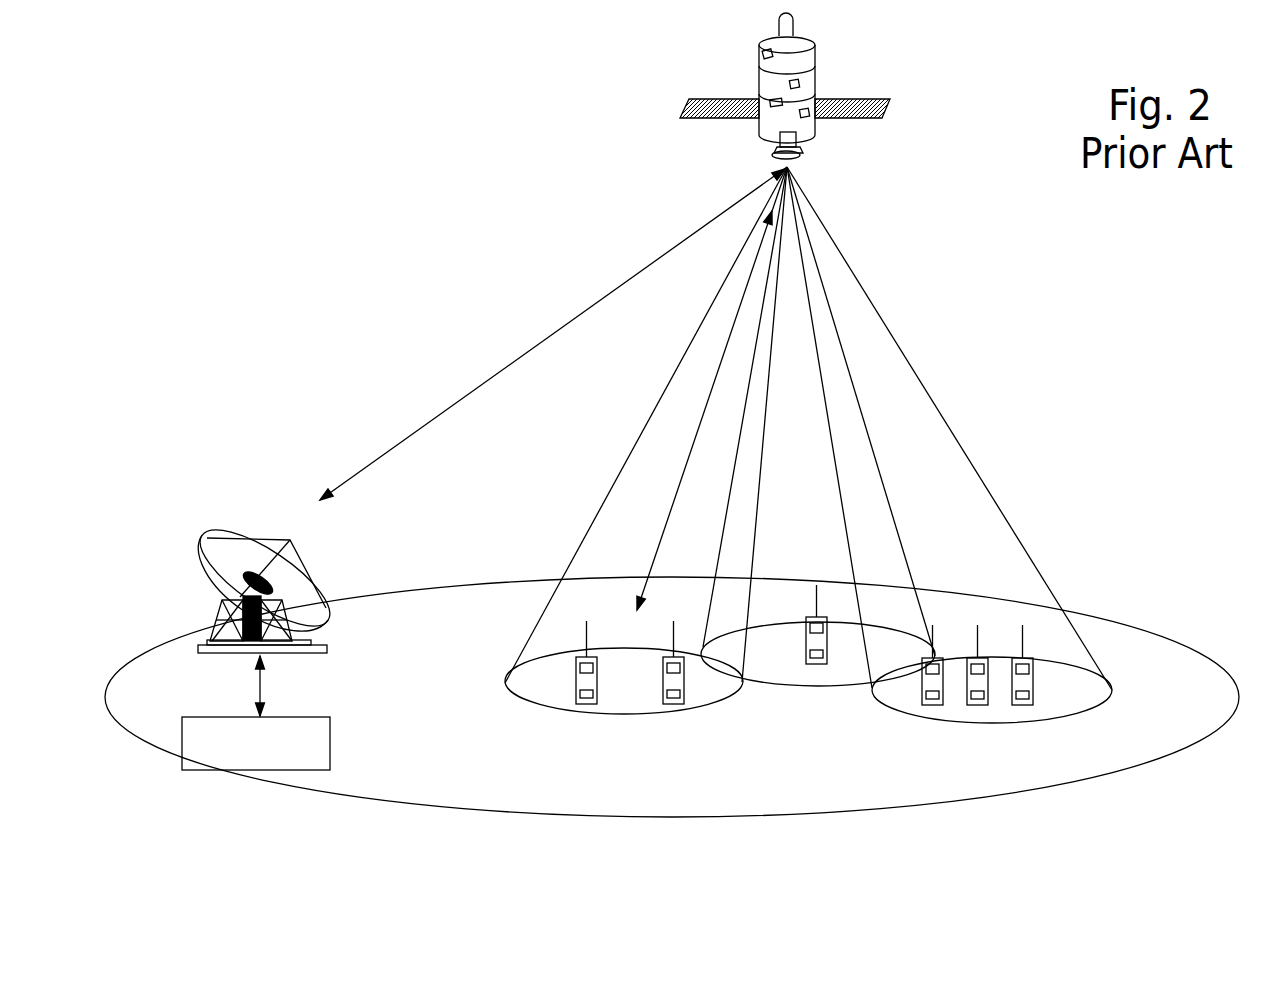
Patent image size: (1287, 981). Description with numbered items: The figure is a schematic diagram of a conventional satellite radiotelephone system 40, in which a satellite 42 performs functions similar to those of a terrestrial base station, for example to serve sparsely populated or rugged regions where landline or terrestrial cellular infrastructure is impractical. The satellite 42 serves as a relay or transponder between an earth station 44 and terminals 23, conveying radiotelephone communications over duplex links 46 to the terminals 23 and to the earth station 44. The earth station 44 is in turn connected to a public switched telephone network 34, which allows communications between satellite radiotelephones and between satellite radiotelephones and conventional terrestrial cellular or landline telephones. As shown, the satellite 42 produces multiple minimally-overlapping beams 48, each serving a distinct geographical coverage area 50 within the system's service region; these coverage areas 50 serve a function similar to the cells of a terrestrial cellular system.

The satellite radiotelephone system 40 is at (505, 126).
The satellite 42 is at (920, 88).
The duplex links 46 is at (490, 345).
The minimally-overlapping beams 48 is at (640, 392).
The earth station 44 is at (218, 660).
The public switched telephone network 34 is at (332, 740).
The geographical coverage areas 50 is at (632, 713).
The terminals 23 is at (575, 678).